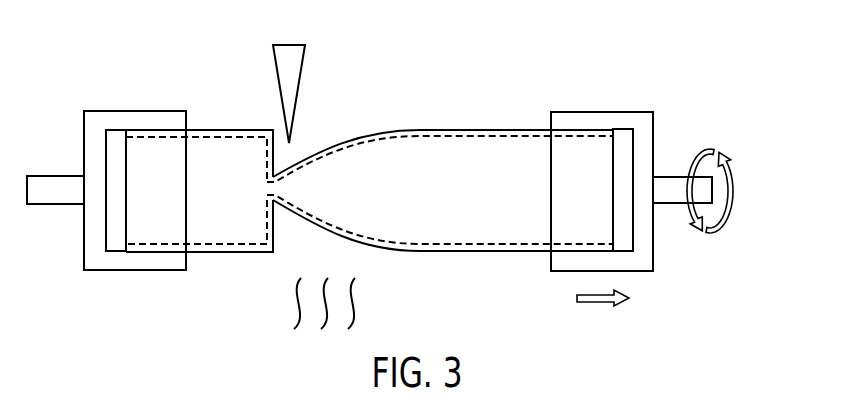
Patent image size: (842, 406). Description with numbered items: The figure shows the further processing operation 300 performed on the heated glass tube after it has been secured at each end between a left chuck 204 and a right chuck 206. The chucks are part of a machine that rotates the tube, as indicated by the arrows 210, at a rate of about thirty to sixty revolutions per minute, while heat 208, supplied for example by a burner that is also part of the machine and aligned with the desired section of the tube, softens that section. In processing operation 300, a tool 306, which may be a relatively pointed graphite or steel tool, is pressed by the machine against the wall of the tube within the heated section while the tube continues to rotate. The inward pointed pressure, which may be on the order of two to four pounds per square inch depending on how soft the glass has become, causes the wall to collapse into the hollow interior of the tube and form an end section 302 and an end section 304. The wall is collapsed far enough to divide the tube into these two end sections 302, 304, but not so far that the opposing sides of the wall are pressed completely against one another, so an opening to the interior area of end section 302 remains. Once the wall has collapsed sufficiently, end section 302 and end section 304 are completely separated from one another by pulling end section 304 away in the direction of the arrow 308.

The processing operation 300 is at (662, 58).
The left chuck 204 is at (136, 111).
The right chuck 206 is at (603, 112).
The heat 208 is at (290, 305).
The arrows 210 is at (734, 200).
The end section 302 is at (215, 130).
The end section 304 is at (476, 130).
The tool 306 is at (303, 78).
The arrow 308 is at (599, 304).